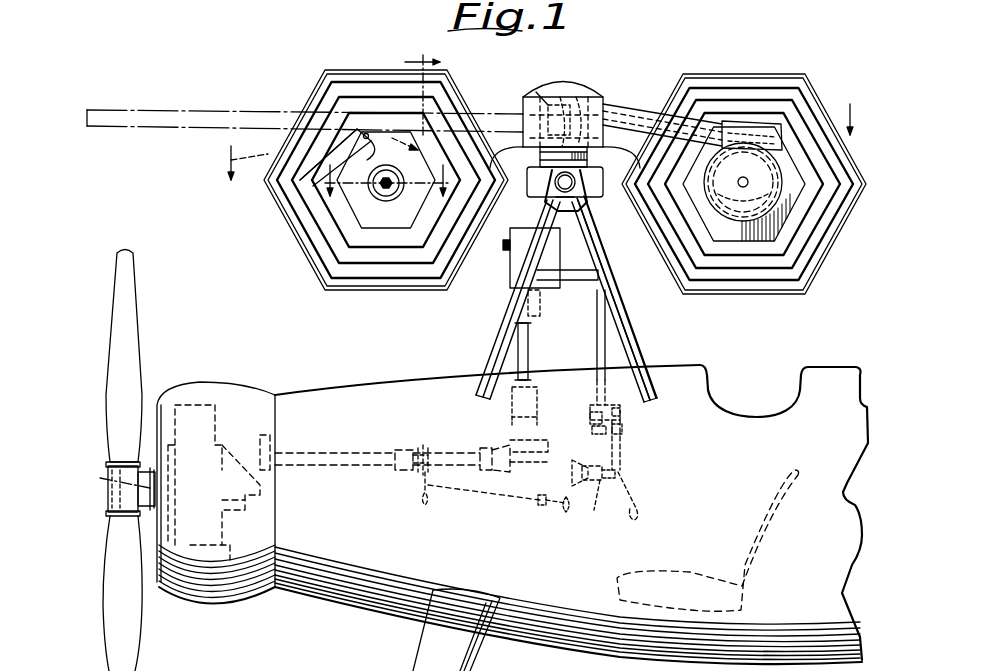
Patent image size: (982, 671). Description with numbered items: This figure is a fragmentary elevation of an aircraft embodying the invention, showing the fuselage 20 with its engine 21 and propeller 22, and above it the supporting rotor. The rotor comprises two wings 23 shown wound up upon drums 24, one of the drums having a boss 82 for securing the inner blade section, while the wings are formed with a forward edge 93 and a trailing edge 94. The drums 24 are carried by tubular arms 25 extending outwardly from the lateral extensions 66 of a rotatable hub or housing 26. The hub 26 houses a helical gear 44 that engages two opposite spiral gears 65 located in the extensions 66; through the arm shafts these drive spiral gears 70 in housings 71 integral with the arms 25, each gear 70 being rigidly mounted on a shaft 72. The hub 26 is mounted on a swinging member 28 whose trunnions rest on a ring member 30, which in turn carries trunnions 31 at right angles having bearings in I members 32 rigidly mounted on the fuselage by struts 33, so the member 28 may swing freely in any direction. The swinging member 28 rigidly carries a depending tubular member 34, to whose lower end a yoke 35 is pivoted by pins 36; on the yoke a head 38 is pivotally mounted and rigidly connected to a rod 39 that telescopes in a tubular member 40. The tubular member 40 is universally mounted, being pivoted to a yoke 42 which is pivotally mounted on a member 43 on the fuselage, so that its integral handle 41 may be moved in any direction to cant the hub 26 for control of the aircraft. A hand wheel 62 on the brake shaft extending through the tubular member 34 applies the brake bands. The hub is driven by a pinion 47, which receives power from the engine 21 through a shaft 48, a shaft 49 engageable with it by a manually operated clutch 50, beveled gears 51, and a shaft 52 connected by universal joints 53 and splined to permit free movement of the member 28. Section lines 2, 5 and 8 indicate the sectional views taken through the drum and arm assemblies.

The section line 2- 2 is at (534, 142).
The section line 5- 5 is at (386, 180).
The section line 8- 8 is at (416, 101).
The fuselage 20 is at (370, 600).
The engine 21 is at (209, 405).
The propeller 22 is at (128, 344).
The wings 23 is at (322, 112).
The drums 24 is at (390, 220).
The arms 25 is at (509, 122).
The rotatable hub or housing 26 is at (556, 93).
The swinging member 28 is at (598, 245).
The ring member 30 is at (596, 178).
The trunnions 31 is at (556, 178).
The I members 32 is at (549, 198).
The struts 33 is at (500, 342).
The depending tubular member 34 is at (597, 354).
The yoke 35 is at (605, 405).
The pins 36 is at (590, 420).
The head 38 is at (622, 418).
The rod 39 is at (624, 432).
The tubular member 40 is at (622, 451).
The handle 41 is at (637, 494).
The yoke 42 is at (614, 500).
The member 43 is at (593, 466).
The helical gear 44 is at (580, 92).
The pinion 47 is at (503, 247).
The shaft 48 is at (327, 454).
The shaft 49 is at (454, 462).
The manually operated clutch 50 is at (417, 482).
The beveled gears 51 is at (527, 460).
The shaft 52 is at (530, 352).
The universal joints 53 is at (540, 302).
The hand wheel 62 is at (592, 433).
The spiral gears 65 is at (584, 80).
The lateral extensions 66 is at (547, 90).
The spiral gears 70 is at (743, 199).
The housings 71 is at (728, 212).
The shaft 72 is at (744, 178).
The boss 82 is at (337, 157).
The forward edge 93 is at (795, 129).
The trailing edge 94 is at (305, 228).